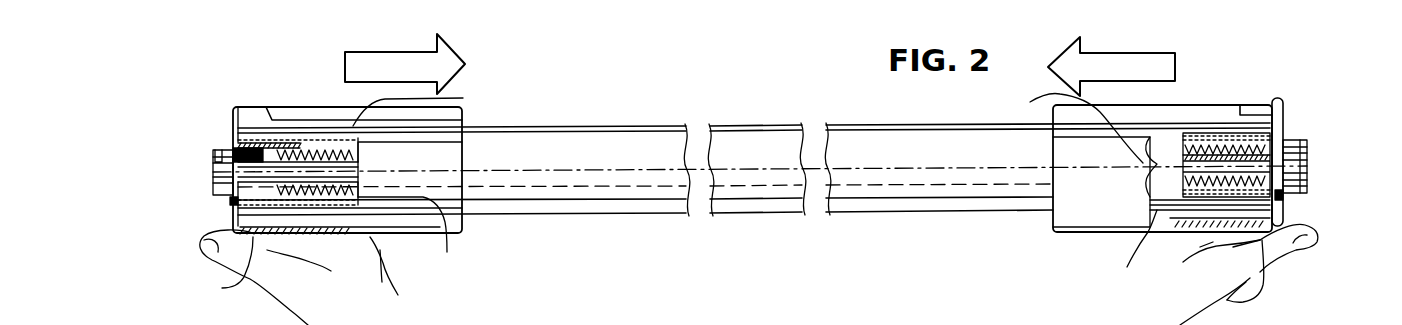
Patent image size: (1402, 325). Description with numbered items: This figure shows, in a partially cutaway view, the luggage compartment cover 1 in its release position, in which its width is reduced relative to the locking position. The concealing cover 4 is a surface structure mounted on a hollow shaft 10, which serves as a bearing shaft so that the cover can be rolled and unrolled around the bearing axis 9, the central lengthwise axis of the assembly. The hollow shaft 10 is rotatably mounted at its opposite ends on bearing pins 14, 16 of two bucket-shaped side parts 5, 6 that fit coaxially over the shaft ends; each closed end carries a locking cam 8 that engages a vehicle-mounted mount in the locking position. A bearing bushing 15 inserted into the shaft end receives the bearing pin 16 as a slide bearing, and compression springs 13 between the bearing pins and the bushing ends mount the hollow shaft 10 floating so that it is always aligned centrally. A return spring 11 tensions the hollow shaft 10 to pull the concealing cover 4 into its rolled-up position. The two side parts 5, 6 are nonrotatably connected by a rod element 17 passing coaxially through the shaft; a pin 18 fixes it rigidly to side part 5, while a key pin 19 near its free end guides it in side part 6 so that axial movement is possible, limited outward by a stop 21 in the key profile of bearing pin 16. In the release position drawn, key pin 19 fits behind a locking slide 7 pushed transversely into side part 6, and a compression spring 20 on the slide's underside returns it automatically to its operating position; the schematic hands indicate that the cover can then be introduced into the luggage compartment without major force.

The luggage compartment cover 1 is at (540, 108).
The concealing cover 4 is at (619, 126).
The side part 5 is at (293, 107).
The side part 6 is at (1173, 105).
The locking slide 7 is at (1277, 98).
The locking cam 8 is at (228, 150).
The bearing axis 9 is at (588, 173).
The hollow shaft 10 is at (463, 98).
The return spring 11 is at (523, 201).
The compression spring 13 is at (320, 207).
The bearing pin 14 is at (238, 288).
The bearing bushing 15 is at (1150, 217).
The bearing pin 16 is at (1284, 196).
The rod element 17 is at (236, 150).
The pin 18 is at (230, 198).
The key pin 19 is at (1306, 148).
The compression spring 20 is at (1227, 300).
The stop 21 is at (1060, 120).